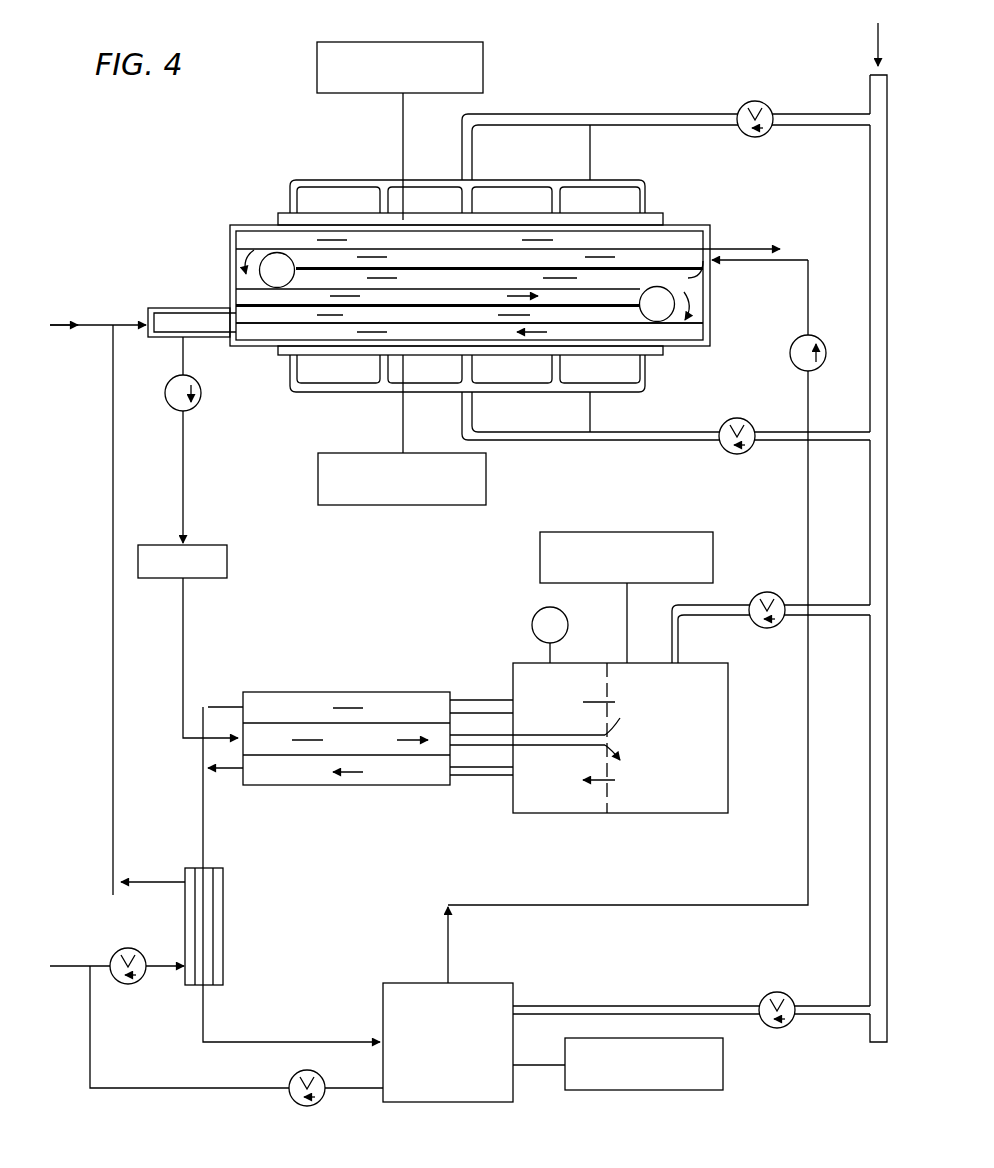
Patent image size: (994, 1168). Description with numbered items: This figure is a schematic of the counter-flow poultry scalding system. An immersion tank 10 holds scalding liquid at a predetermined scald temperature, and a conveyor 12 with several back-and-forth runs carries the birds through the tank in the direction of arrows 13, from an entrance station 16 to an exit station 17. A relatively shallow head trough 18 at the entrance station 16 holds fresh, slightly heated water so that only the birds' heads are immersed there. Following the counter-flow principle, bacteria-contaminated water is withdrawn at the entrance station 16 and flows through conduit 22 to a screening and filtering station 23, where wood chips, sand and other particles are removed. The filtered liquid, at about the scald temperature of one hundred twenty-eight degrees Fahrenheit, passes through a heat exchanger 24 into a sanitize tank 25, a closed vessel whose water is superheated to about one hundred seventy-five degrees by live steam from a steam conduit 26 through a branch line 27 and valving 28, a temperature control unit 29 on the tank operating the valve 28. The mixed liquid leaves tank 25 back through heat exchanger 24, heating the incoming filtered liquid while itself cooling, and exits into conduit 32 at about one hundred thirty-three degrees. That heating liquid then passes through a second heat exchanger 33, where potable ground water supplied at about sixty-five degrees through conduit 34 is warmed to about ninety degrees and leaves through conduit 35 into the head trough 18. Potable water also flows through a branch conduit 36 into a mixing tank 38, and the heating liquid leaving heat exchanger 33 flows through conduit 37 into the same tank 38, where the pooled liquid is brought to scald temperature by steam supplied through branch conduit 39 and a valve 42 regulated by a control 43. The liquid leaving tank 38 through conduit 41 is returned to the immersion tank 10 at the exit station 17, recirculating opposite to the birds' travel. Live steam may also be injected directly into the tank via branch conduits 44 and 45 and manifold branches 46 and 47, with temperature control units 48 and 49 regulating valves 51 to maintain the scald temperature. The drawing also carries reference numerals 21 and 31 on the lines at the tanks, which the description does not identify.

The immersion tank 10 is at (238, 224).
The conveyor 12 is at (595, 325).
The arrows 13 is at (70, 326).
The entrance station 16 is at (226, 307).
The exit station 17 is at (715, 240).
The head trough 18 is at (160, 306).
The pressure gauge line 21 is at (165, 393).
The conduit 22 is at (183, 520).
The screening and filtering station 23 is at (228, 562).
The heat exchanger 24 is at (348, 690).
The sanitize tank 25 is at (730, 748).
The steam conduit 26 is at (888, 476).
The branch line 27 is at (838, 604).
The valve 28 is at (772, 593).
The temperature control unit 29 is at (678, 531).
The pressure gauge 31 is at (532, 633).
The conduit 32 is at (203, 832).
The heat exchanger 33 is at (225, 890).
The conduit 34 is at (72, 963).
The conduit 35 is at (112, 782).
The branch conduit 36 is at (186, 1090).
The conduit 37 is at (280, 1041).
The mixing tank 38 is at (445, 1103).
The branch conduit 39 is at (667, 1005).
The conduit 41 is at (610, 903).
The valve 42 is at (778, 992).
The control 43 is at (680, 1092).
The branch conduit 44 is at (657, 112).
The branch conduit 45 is at (673, 432).
The manifold branch 46 is at (590, 178).
The manifold branch 47 is at (585, 394).
The temperature control unit 48 is at (410, 42).
The temperature control unit 49 is at (445, 507).
The valves 51 is at (763, 102).